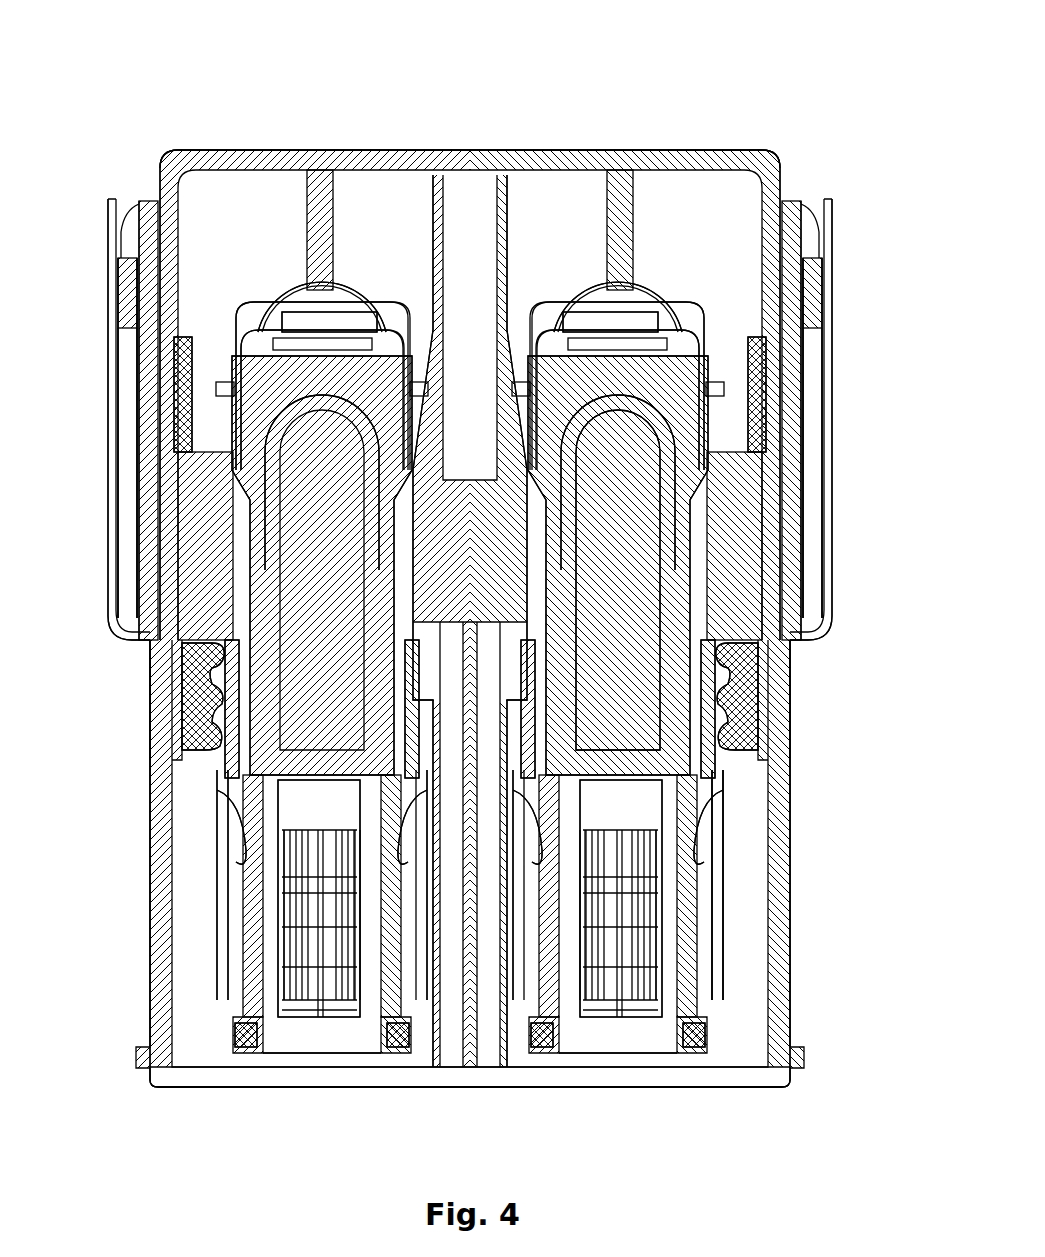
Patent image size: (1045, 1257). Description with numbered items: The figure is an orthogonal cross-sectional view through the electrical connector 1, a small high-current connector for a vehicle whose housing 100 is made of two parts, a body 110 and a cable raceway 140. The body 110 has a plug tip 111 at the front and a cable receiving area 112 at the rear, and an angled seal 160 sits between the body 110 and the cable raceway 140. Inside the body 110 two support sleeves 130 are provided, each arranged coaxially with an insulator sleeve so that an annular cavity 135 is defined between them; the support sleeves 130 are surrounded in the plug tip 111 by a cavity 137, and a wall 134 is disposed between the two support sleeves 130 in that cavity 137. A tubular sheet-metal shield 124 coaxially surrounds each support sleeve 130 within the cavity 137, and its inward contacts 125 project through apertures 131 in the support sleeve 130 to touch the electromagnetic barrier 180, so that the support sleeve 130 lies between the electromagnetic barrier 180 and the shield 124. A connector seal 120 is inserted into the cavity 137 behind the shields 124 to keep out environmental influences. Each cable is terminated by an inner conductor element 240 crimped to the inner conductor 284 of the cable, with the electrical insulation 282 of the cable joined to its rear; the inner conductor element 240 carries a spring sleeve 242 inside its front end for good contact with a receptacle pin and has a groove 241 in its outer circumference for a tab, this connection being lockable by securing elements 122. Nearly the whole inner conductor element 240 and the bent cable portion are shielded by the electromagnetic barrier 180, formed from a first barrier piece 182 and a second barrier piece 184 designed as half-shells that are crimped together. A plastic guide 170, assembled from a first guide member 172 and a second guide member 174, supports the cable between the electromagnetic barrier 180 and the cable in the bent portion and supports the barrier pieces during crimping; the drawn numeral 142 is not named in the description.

The electrical connector 1 is at (118, 40).
The housing 100 is at (838, 180).
The body 110 is at (790, 387).
The plug tip 111 is at (780, 972).
The cable receiving area 112 is at (790, 387).
The connector seal 120 is at (200, 700).
The securing element 122 is at (233, 1033).
The shield 124 is at (727, 923).
The inward contact 125 is at (247, 850).
The support sleeve 130 is at (225, 757).
The aperture 131 is at (223, 832).
The wall 134 is at (472, 1052).
The annular cavity 135 is at (185, 650).
The cavity 137 is at (735, 1025).
The cable raceway 140 is at (773, 310).
The latch arm 142 is at (773, 310).
The angled seal 160 is at (176, 343).
The guide 170 is at (298, 346).
The first guide member 172 is at (222, 410).
The second guide member 174 is at (385, 460).
The electromagnetic barrier 180 is at (313, 326).
The first barrier piece 182 is at (240, 445).
The second barrier piece 184 is at (368, 350).
The inner conductor element 240 is at (665, 760).
The groove 241 is at (273, 977).
The spring sleeve 242 is at (300, 1003).
The electrical insulation 282 is at (665, 540).
The inner conductor 284 is at (635, 650).